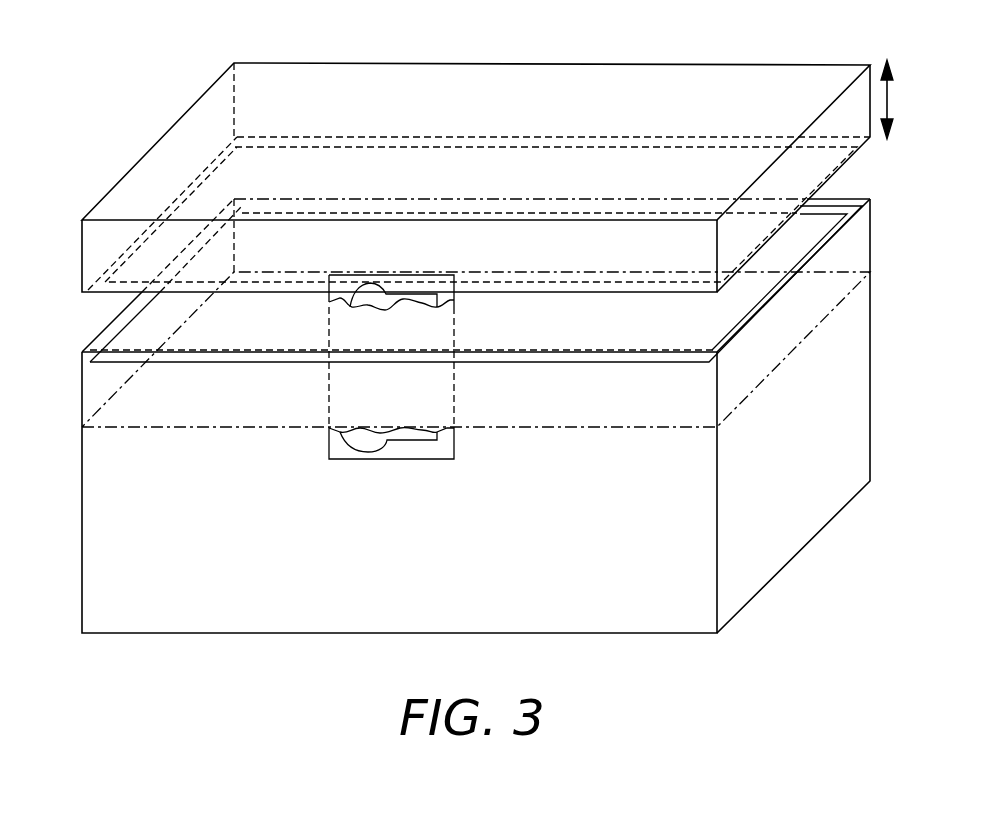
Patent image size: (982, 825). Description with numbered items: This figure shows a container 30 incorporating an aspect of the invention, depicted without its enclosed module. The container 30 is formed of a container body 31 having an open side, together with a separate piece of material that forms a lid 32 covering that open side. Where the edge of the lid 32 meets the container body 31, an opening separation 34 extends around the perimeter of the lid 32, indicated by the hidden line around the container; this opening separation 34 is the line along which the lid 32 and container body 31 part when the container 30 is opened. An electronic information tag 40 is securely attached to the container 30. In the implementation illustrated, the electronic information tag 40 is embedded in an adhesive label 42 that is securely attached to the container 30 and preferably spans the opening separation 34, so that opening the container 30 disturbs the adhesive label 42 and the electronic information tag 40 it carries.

The container 30 is at (88, 318).
The container body 31 is at (82, 532).
The lid 32 is at (753, 75).
The opening separation 34 is at (645, 428).
The electronic information tag 40 is at (418, 293).
The adhesive label 42 is at (330, 303).